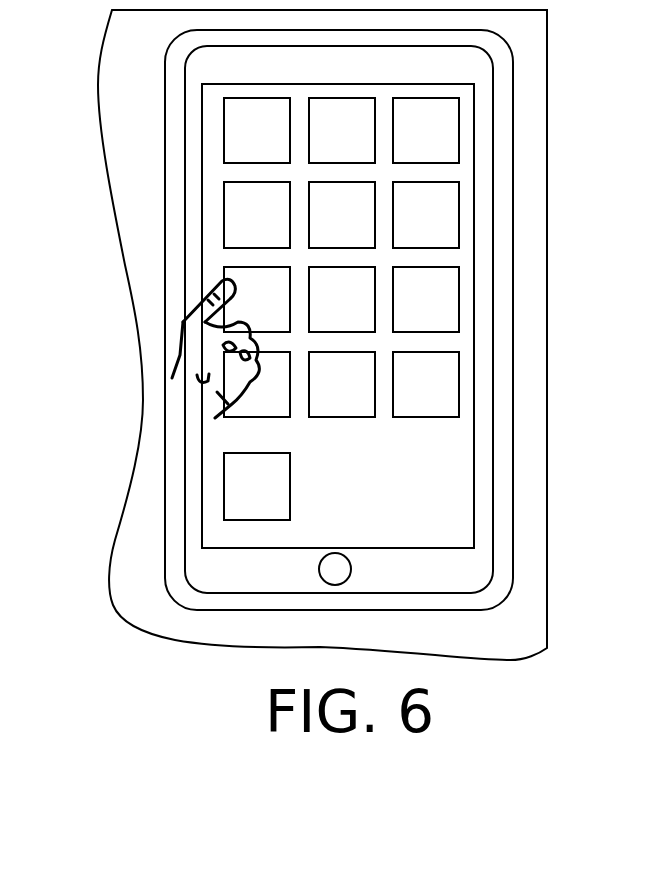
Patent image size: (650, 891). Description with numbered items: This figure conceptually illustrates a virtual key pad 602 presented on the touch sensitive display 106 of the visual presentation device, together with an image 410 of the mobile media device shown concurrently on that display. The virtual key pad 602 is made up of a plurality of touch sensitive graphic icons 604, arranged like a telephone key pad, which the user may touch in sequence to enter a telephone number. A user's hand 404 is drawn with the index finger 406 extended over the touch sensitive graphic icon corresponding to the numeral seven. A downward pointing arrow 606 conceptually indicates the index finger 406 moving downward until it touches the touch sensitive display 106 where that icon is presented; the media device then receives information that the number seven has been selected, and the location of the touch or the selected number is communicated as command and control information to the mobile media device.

The touch sensitive display 106 is at (516, 645).
The image of the mobile media device 410 is at (124, 70).
The virtual key pad 602 is at (396, 518).
The touch sensitive graphic icons 604 is at (406, 417).
The downward pointing arrow 606 is at (262, 300).
The user's hand 404 is at (196, 392).
The index finger 406 is at (213, 295).